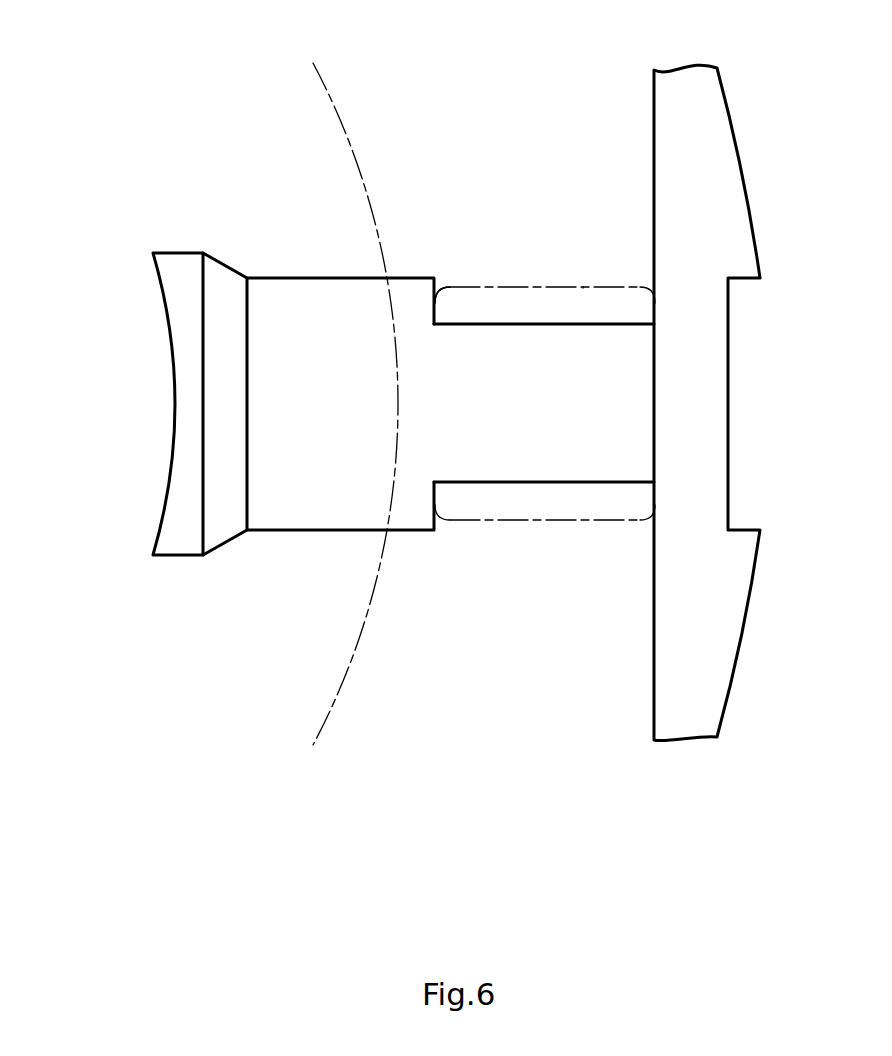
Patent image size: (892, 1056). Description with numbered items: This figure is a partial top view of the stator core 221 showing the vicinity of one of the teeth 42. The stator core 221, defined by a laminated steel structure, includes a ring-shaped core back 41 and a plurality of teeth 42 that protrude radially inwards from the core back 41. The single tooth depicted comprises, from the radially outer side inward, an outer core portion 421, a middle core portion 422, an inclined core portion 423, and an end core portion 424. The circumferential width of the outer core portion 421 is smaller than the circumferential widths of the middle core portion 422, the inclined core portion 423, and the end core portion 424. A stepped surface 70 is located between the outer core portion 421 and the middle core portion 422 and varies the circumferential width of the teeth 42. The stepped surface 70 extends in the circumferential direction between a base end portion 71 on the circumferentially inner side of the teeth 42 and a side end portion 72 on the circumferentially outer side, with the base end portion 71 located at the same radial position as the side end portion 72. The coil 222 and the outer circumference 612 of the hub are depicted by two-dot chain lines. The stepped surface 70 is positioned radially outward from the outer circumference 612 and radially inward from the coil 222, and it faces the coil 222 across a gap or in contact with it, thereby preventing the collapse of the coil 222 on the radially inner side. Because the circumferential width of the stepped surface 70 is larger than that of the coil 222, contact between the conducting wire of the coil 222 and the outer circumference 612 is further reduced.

The core back 41 is at (713, 632).
The teeth 42 is at (343, 455).
The stepped surface 70 is at (467, 298).
The base end portion 71 is at (435, 325).
The side end portion 72 is at (434, 278).
The stator core 221 is at (705, 390).
The coil 222 is at (583, 307).
The outer core portion 421 is at (542, 430).
The middle core portion 422 is at (335, 455).
The inclined core portion 423 is at (223, 482).
The end core portion 424 is at (187, 392).
The outer circumference 612 is at (363, 625).